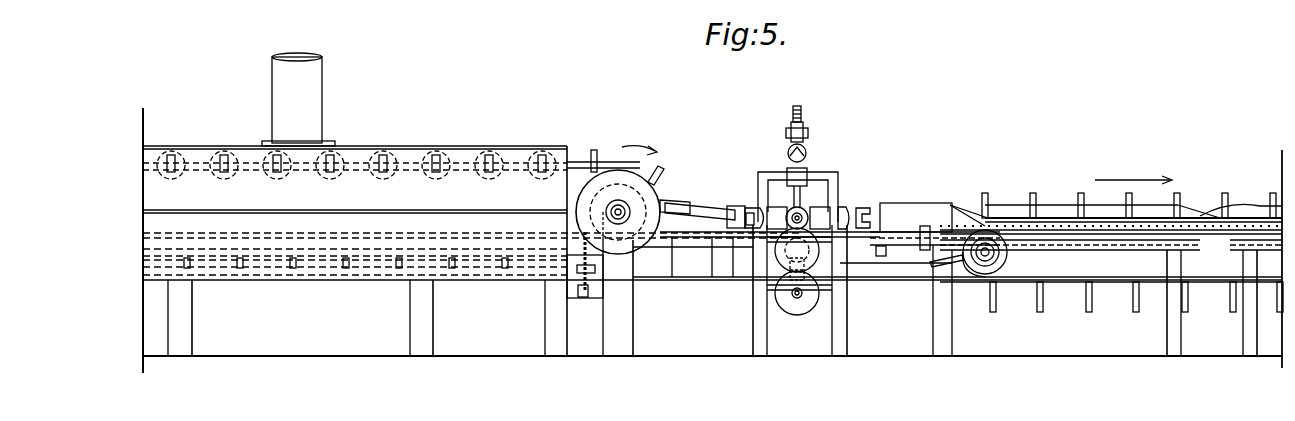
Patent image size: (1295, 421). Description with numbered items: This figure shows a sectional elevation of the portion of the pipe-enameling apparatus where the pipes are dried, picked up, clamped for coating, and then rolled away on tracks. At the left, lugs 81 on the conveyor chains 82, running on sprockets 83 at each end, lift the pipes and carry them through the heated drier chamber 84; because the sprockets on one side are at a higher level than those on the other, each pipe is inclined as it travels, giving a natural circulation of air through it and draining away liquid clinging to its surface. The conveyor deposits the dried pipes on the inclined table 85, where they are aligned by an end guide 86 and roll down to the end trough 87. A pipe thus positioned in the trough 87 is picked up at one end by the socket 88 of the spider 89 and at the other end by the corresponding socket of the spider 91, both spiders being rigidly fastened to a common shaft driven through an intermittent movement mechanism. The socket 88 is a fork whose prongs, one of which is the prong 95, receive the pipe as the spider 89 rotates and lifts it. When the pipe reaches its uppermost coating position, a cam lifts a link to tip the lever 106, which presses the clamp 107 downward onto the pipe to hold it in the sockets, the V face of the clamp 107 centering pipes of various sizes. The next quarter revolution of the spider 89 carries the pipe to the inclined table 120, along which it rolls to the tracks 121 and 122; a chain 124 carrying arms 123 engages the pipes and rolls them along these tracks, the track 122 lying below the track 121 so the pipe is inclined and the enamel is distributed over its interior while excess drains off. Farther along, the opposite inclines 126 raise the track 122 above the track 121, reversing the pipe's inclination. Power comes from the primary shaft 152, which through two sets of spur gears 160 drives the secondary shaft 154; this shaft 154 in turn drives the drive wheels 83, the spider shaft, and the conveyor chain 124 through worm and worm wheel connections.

The lug 81 is at (598, 152).
The conveyor chain 82 is at (636, 172).
The sprocket 83 is at (618, 212).
The drier chamber 84 is at (408, 145).
The inclined table 85 is at (703, 210).
The end guide 86 is at (675, 200).
The end trough 87 is at (742, 205).
The socket 88 is at (734, 205).
The spider 89 is at (756, 254).
The spider 91 is at (790, 212).
The prong 95 is at (789, 152).
The lever 106 is at (802, 112).
The clamp 107 is at (805, 148).
The inclined table 120 is at (902, 203).
The track 121 is at (996, 210).
The track 122 is at (1248, 205).
The arm 123 is at (1035, 195).
The chain 124 is at (1058, 283).
The opposite incline 126 is at (1195, 205).
The primary shaft 152 is at (567, 272).
The secondary shaft 154 is at (465, 236).
The spur gears 160 is at (590, 298).